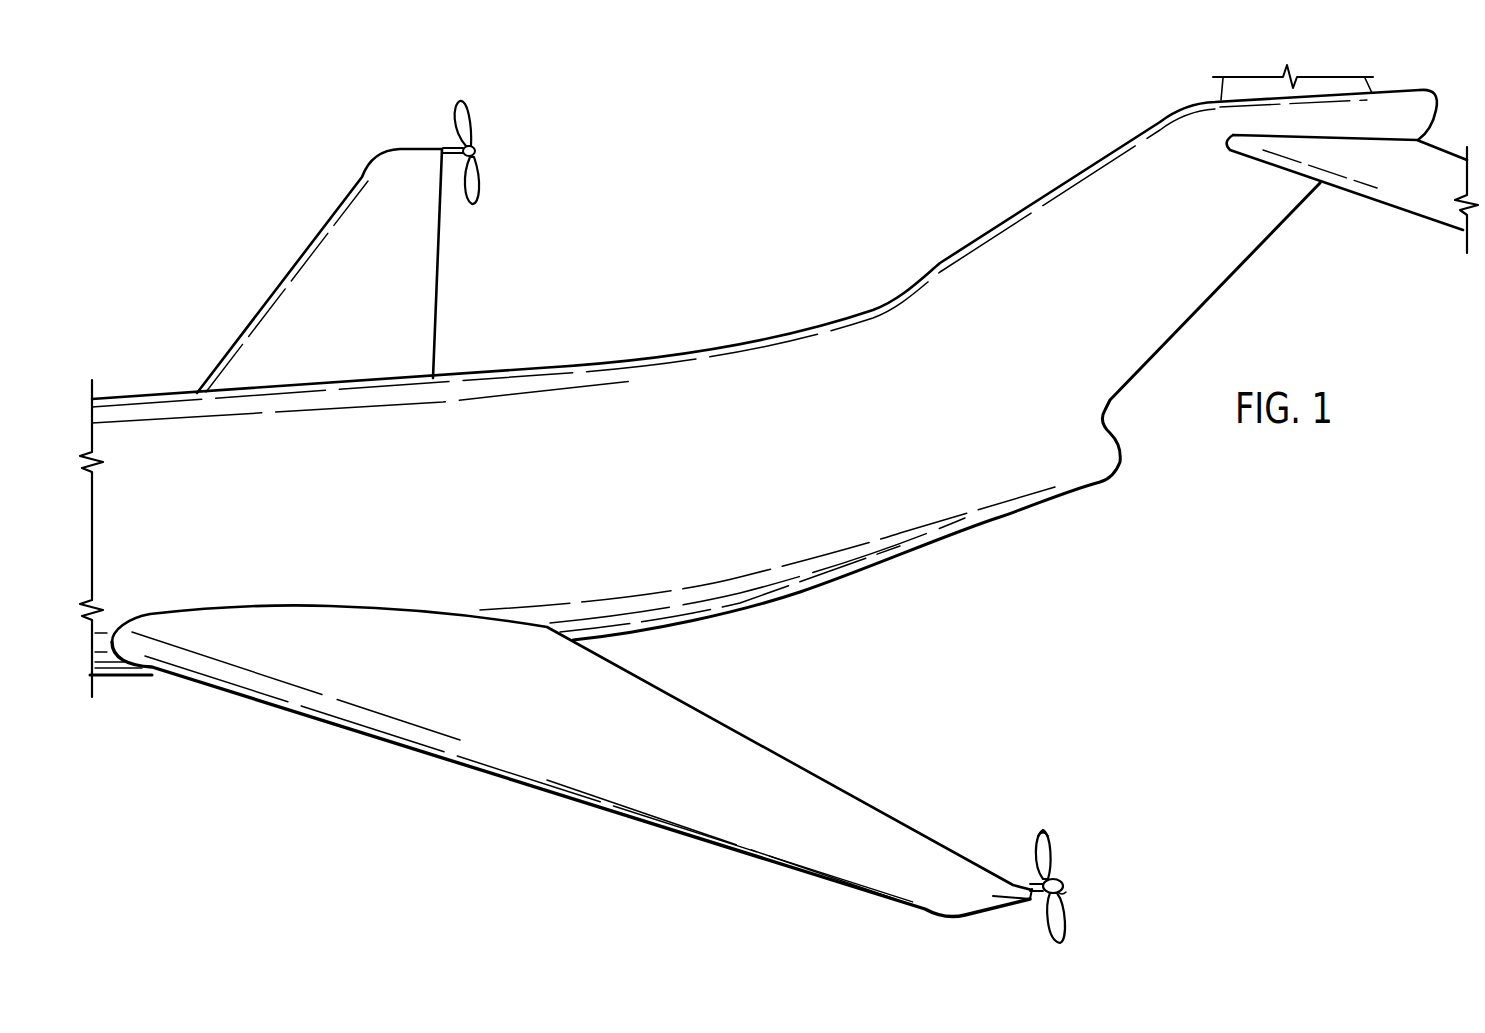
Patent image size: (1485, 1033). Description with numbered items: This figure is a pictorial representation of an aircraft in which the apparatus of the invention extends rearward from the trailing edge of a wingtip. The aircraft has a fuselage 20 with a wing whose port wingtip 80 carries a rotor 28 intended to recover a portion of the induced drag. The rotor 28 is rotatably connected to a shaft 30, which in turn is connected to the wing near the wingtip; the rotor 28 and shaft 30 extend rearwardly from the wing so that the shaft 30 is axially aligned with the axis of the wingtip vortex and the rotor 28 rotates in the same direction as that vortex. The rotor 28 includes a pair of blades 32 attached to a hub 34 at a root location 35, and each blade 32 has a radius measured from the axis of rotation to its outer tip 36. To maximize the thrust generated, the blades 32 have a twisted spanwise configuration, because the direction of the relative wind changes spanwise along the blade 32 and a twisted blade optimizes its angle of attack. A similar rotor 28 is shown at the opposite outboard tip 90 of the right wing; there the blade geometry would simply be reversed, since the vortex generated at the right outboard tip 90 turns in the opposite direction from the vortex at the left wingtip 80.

The fuselage 20 is at (452, 393).
The rotor 28 is at (1055, 869).
The shaft 30 is at (1025, 885).
The blade 32 is at (1047, 842).
The hub 34 is at (1063, 887).
The root location 35 is at (1062, 895).
The outer tip 36 is at (1043, 837).
The port wingtip 80 is at (927, 905).
The outboard tip 90 is at (367, 174).